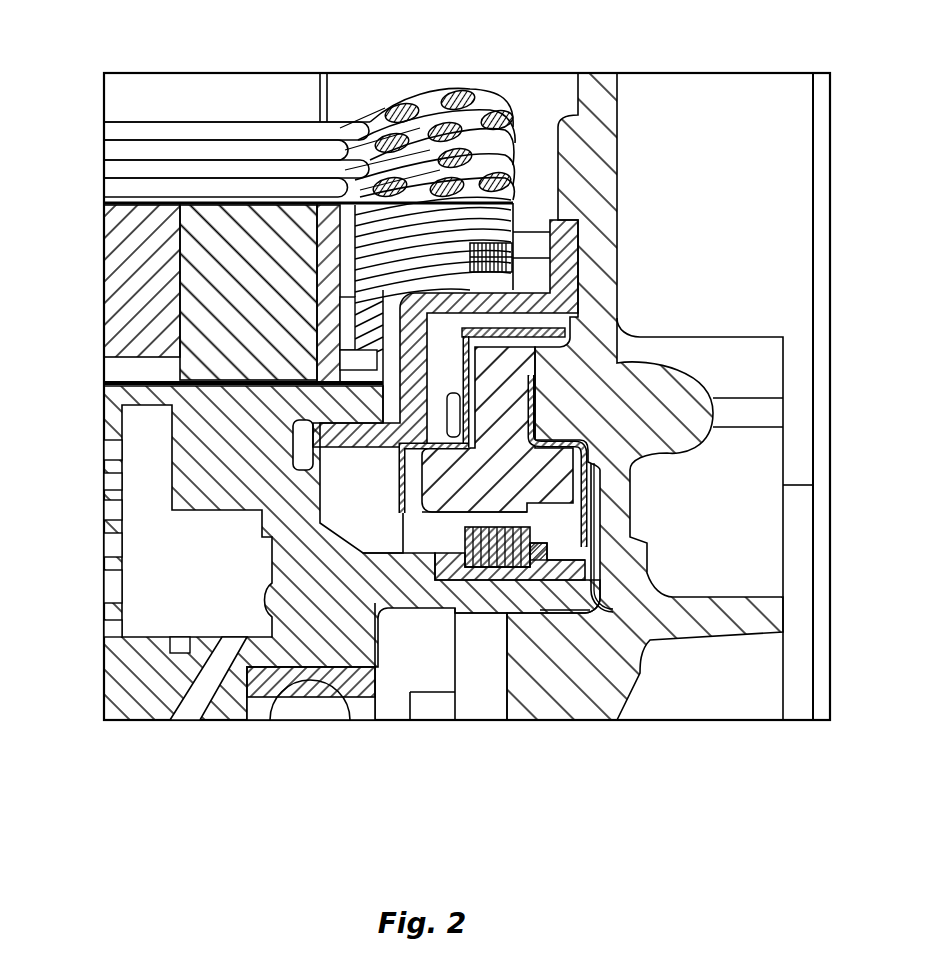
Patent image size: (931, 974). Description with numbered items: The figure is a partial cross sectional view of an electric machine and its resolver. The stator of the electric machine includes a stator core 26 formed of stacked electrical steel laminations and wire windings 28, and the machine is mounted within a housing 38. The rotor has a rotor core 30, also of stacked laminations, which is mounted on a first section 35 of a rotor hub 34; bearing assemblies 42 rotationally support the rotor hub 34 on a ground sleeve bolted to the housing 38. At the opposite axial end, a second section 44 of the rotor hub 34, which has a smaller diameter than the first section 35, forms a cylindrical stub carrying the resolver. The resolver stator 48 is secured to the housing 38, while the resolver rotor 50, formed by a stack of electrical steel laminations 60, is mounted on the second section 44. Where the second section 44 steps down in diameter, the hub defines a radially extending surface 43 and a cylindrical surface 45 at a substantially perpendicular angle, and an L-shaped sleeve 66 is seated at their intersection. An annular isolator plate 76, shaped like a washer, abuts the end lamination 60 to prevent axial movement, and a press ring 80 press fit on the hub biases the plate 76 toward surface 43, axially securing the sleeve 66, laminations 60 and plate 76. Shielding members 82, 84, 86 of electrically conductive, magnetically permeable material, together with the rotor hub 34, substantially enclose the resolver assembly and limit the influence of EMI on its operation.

The stator core 26 is at (247, 92).
The windings 28 is at (395, 108).
The housing 38 is at (612, 141).
The rotor core 30 is at (118, 250).
The shielding member 86 is at (530, 310).
The first section 35 is at (132, 383).
The rotor hub 34 is at (195, 420).
The resolver stator 48 is at (513, 418).
The shielding member 82 is at (397, 472).
The resolver rotor 50 is at (464, 522).
The shielding member 84 is at (586, 510).
The sleeve 66 is at (443, 555).
The cylindrical surface 45 is at (550, 568).
The press ring 80 is at (600, 571).
The radially extending surface 43 is at (447, 582).
The laminations 60 is at (500, 577).
The isolator plate 76 is at (533, 593).
The second section 44 is at (547, 593).
The bearing assemblies 42 is at (357, 718).